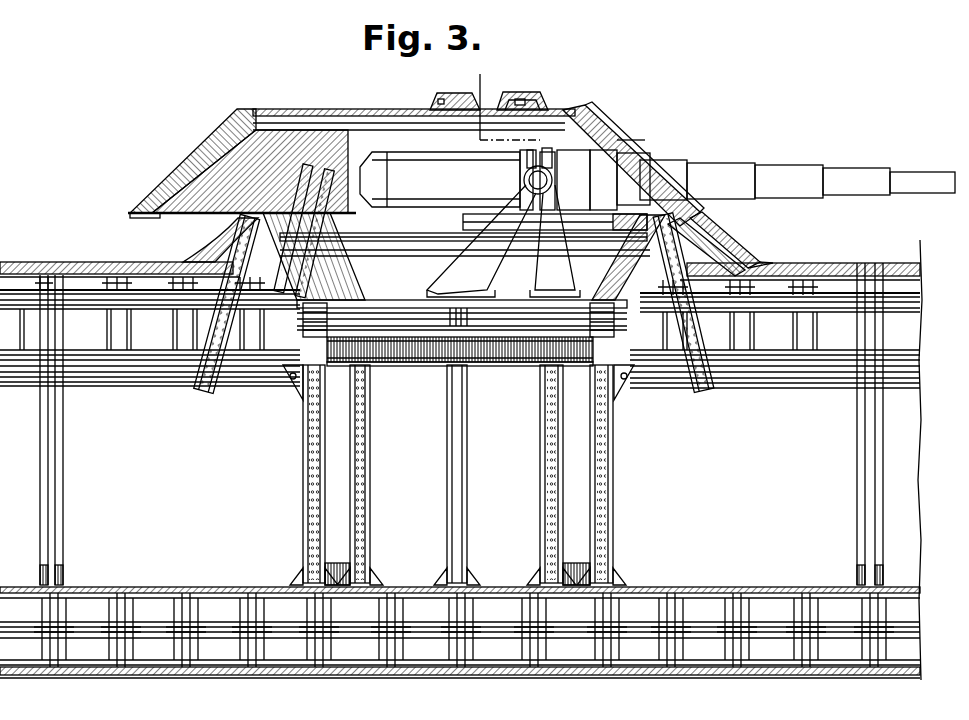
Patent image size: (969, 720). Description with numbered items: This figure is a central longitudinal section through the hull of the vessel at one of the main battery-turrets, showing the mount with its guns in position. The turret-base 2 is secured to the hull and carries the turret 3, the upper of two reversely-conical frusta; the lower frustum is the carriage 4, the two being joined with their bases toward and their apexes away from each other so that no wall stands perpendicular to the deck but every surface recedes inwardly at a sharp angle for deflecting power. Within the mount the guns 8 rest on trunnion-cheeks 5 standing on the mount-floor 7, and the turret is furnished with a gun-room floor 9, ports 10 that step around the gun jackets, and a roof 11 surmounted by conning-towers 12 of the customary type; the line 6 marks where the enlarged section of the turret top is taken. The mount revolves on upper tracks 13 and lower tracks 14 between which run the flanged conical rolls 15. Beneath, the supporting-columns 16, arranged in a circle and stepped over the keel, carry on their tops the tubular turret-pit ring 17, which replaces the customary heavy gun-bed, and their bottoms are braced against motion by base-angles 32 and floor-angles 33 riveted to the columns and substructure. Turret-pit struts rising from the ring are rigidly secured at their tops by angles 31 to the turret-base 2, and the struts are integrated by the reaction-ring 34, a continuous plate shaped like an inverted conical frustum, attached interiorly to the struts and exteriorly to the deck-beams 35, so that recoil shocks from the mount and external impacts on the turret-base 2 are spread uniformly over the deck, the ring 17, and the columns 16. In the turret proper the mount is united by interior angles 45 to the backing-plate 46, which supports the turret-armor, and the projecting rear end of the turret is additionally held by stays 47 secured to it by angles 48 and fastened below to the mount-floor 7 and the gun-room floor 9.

The turret-base 2 is at (690, 224).
The main battery-turret 3 is at (592, 118).
The carriage 4 is at (462, 292).
The trunnion-cheeks 5 is at (503, 222).
The section line 6 6 is at (566, 103).
The mount-floor 7 is at (410, 252).
The guns 8 is at (440, 179).
The gun-room floor 9 is at (414, 236).
The ports 10 is at (652, 150).
The roof 11 is at (335, 112).
The conning-towers 12 is at (522, 93).
The upper tracks 13 is at (378, 300).
The lower tracks 14 is at (395, 330).
The flanged conical rolls 15 is at (285, 372).
The supporting-columns 16 is at (303, 503).
The turret-pit ring 17 is at (460, 353).
The angles 31 is at (712, 242).
The base-angles 32 is at (302, 585).
The floor-angles 33 is at (338, 563).
The reaction-ring 34 is at (255, 314).
The deck-beams 35 is at (240, 358).
The interior angles 45 is at (555, 223).
The backing-plate 46 is at (400, 152).
The stays 47 is at (334, 172).
The angles 48 is at (308, 170).